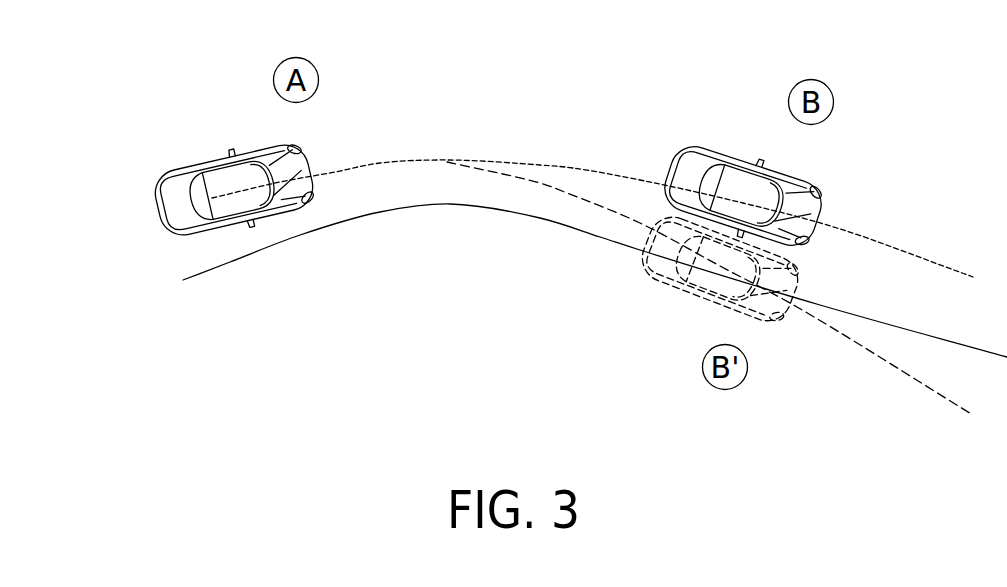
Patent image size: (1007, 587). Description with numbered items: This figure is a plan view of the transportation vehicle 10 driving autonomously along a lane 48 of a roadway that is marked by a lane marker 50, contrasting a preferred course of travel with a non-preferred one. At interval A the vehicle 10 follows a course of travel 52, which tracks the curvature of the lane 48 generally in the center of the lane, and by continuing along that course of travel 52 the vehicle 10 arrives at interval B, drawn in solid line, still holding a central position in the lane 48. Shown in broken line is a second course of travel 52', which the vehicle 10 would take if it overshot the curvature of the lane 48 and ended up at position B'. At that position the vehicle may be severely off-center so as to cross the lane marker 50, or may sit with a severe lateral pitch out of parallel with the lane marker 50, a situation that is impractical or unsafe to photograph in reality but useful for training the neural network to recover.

The transportation vehicle 10 is at (190, 136).
The lane 48 is at (595, 189).
The lane marker 50 is at (332, 227).
The course of travel 52 is at (592, 175).
The course of travel 52' is at (710, 288).